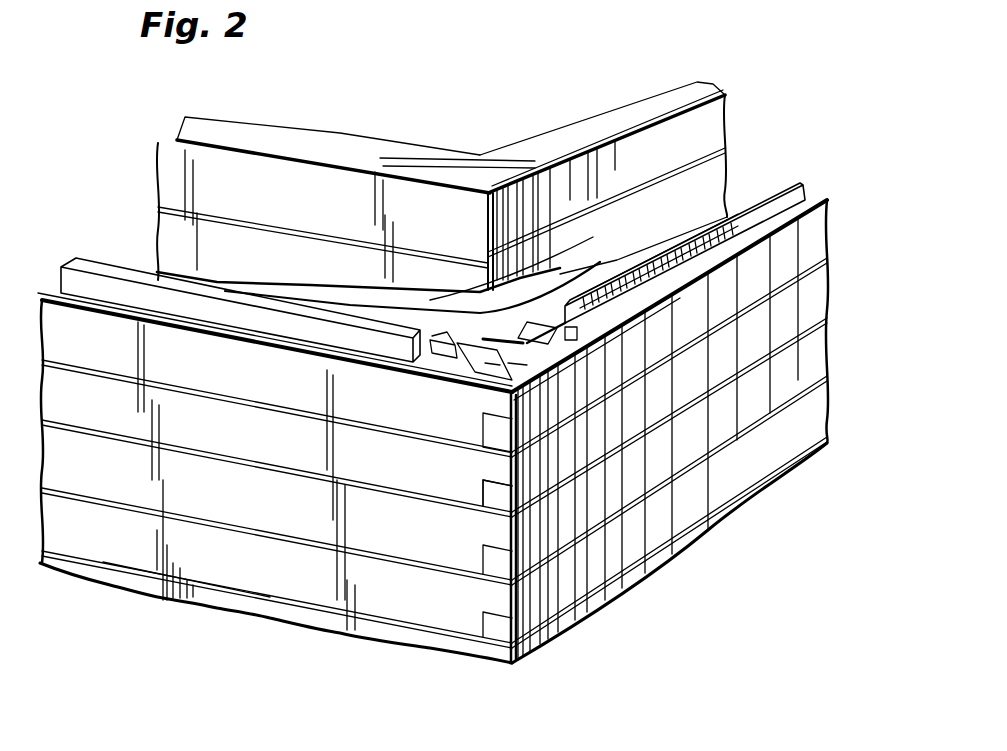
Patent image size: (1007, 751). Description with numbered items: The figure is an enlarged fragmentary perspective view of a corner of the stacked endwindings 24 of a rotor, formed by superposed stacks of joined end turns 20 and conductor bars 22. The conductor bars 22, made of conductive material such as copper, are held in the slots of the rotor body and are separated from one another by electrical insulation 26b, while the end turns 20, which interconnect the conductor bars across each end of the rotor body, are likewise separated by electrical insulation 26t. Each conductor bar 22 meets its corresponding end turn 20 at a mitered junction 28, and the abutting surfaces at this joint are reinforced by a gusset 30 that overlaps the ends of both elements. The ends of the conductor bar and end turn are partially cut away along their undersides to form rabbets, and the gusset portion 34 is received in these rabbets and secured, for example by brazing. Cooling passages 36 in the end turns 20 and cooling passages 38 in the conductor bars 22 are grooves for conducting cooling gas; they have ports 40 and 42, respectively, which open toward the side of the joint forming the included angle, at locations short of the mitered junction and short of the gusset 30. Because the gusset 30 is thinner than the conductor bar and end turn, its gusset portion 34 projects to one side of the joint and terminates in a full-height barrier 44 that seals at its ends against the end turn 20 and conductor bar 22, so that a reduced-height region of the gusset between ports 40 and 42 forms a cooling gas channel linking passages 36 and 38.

The end turn 20 is at (585, 111).
The conductor bar 22 is at (260, 125).
The stacked endwindings 24 is at (668, 578).
The electrical insulation 26t is at (826, 385).
The electrical insulation 26b is at (103, 563).
The mitered junction 28 is at (473, 378).
The gusset 30 is at (510, 375).
The gusset portion 34 is at (493, 490).
The cooling passage 36 is at (780, 207).
The cooling passage 38 is at (93, 288).
The port 40 is at (585, 305).
The port 42 is at (418, 357).
The barrier 44 is at (357, 295).